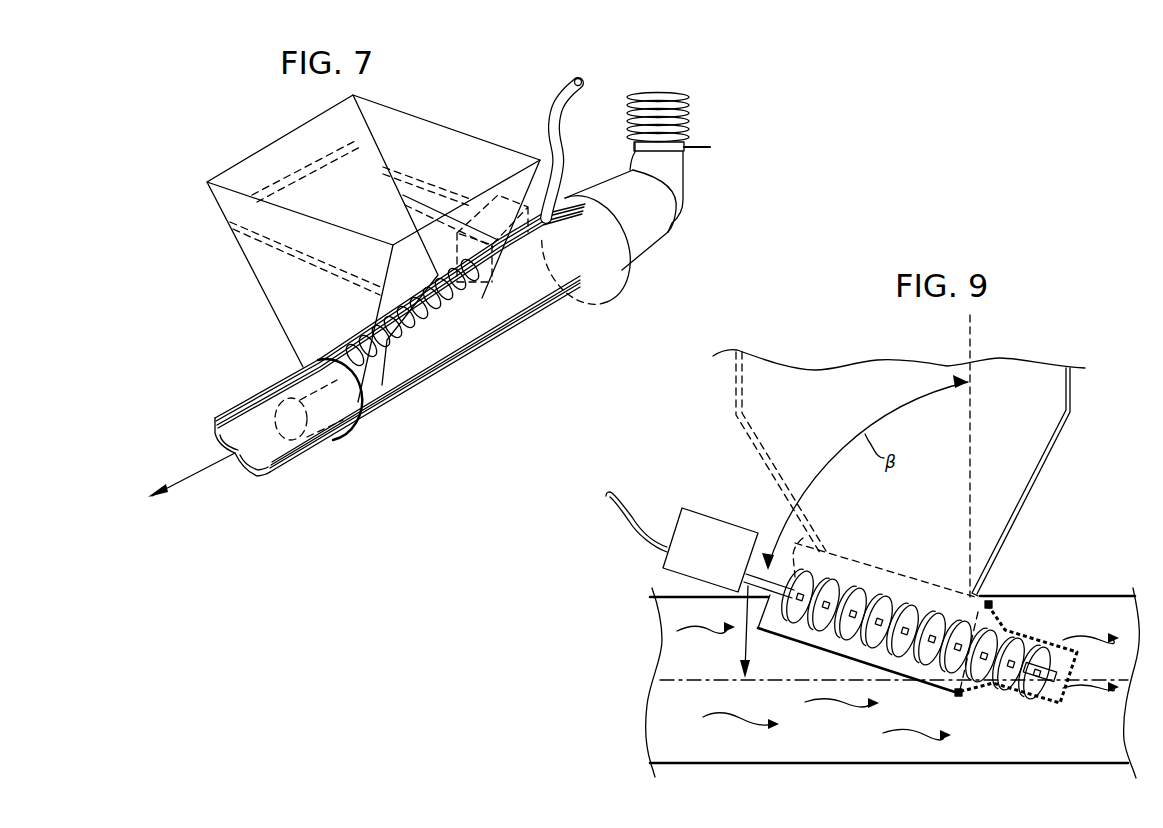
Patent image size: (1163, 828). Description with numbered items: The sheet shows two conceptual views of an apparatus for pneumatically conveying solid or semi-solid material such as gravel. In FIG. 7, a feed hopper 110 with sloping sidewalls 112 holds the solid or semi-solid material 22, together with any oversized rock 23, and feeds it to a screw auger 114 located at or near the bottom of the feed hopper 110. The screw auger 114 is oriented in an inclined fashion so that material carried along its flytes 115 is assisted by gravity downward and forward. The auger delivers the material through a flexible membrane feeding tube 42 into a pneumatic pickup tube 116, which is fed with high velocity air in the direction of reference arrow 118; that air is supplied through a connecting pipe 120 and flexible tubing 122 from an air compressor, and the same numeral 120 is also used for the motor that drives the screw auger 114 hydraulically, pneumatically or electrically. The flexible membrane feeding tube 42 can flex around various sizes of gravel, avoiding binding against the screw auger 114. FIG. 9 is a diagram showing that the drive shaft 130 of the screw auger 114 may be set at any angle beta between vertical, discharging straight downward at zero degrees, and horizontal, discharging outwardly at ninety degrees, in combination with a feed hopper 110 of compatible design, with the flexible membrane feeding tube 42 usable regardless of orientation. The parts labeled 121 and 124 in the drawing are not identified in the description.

In FIG. 7, the feed hopper 110 is at (404, 108).
In FIG. 9, the feed hopper 110 is at (1073, 392).
In FIG. 7, the sloping sidewalls 112 is at (301, 155).
In FIG. 9, the sloping sidewalls 112 is at (1033, 473).
In FIG. 7, the screw auger 114 is at (437, 330).
In FIG. 9, the screw auger 114 is at (1050, 670).
In FIG. 7, the flytes 115 is at (458, 308).
In FIG. 7, the pneumatic pickup tube 116 is at (437, 372).
In FIG. 9, the pneumatic pickup tube 116 is at (693, 765).
In FIG. 7, the reference arrow 118 is at (181, 468).
In FIG. 9, the reference arrow 118 is at (1063, 640).
In FIG. 7, the connecting pipe 120 is at (604, 299).
In FIG. 9, the connecting pipe 120 is at (701, 509).
In FIG. 7, the elbow conduit 121 is at (685, 214).
In FIG. 7, the flexible tubing 122 is at (685, 100).
In FIG. 7, the flexible membrane feeding tube 42 is at (333, 430).
In FIG. 9, the flexible membrane feeding tube 42 is at (993, 606).
In FIG. 9, the solid or semi-solid material 22 is at (862, 657).
In FIG. 9, the oversized rock 23 is at (957, 693).
In FIG. 9, the outlet deflector 124 is at (1062, 708).
In FIG. 9, the drive shaft 130 is at (800, 556).